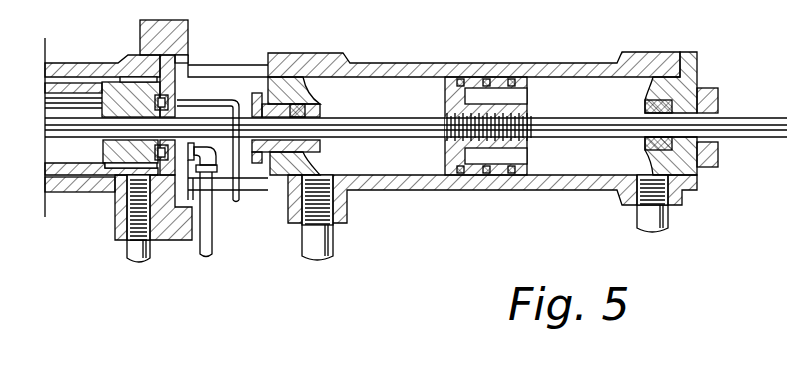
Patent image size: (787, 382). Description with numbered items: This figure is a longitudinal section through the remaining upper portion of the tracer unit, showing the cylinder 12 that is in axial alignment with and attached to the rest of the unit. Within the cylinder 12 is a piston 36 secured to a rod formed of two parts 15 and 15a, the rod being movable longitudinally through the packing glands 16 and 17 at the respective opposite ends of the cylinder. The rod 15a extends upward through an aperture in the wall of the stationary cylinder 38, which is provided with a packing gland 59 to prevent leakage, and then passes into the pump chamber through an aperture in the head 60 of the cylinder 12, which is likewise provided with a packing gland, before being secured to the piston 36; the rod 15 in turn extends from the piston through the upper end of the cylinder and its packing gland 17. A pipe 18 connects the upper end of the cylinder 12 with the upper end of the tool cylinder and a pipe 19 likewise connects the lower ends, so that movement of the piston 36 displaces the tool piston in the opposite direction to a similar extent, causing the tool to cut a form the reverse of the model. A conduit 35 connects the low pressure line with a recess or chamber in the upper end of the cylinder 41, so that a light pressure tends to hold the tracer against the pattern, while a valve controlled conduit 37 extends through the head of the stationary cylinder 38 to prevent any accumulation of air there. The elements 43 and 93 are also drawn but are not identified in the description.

The cylinder 12 is at (424, 192).
The rod part 15 is at (586, 101).
The rod part 15a is at (400, 107).
The packing gland 16 is at (313, 149).
The packing gland 17 is at (667, 138).
The pipe 18 is at (660, 230).
The pipe 19 is at (333, 247).
The conduit 35 is at (150, 260).
The piston 36 is at (523, 158).
The valve controlled conduit 37 is at (212, 236).
The stationary cylinder 38 is at (100, 90).
The cylinder 41 is at (83, 44).
The bearing block 43 is at (137, 75).
The packing gland 59 is at (170, 110).
The head 60 is at (258, 66).
The tube 93 is at (240, 200).